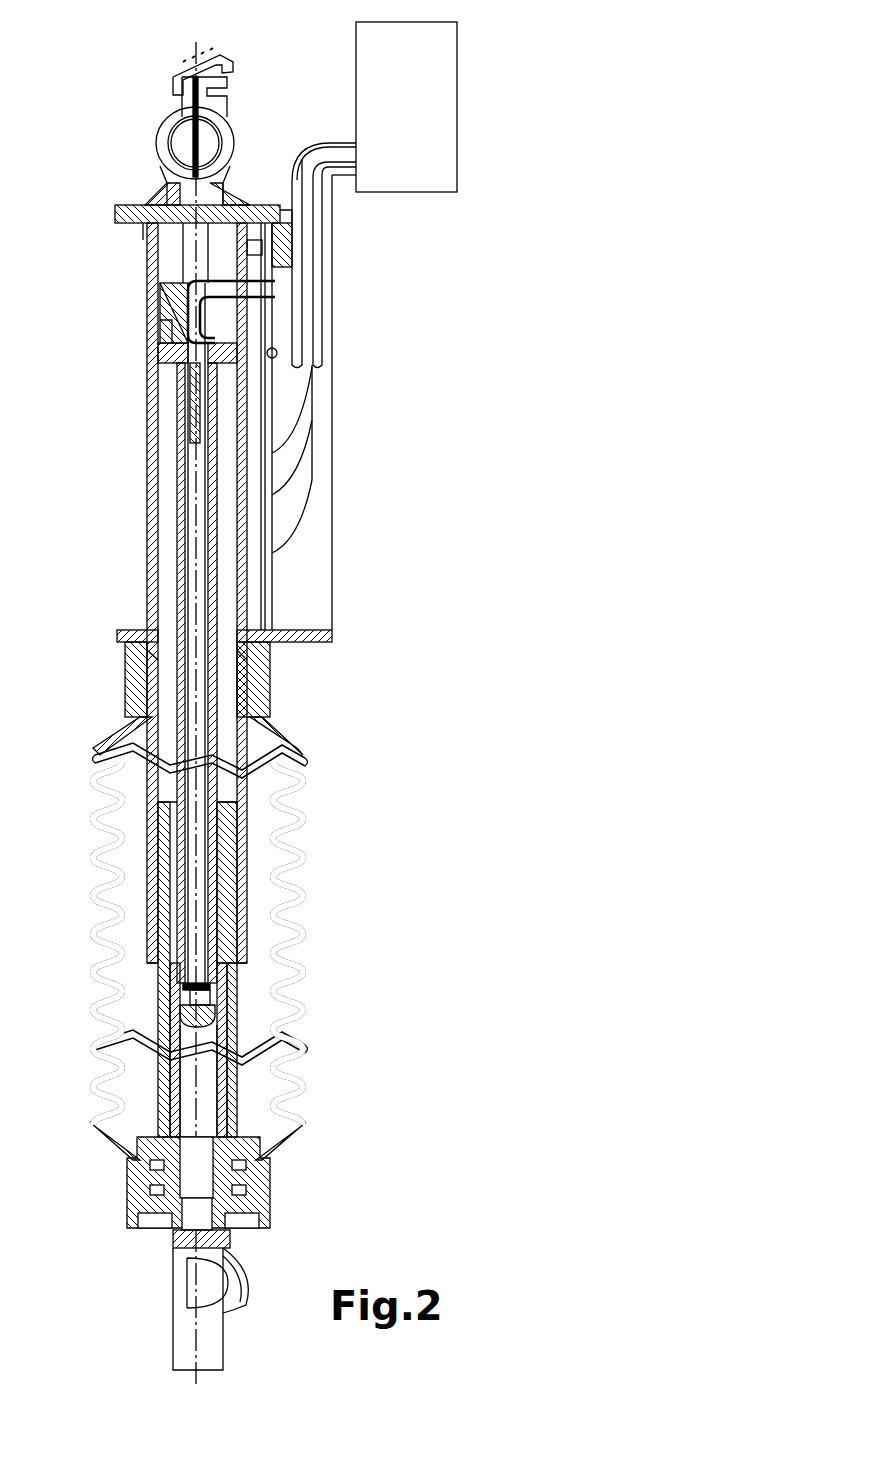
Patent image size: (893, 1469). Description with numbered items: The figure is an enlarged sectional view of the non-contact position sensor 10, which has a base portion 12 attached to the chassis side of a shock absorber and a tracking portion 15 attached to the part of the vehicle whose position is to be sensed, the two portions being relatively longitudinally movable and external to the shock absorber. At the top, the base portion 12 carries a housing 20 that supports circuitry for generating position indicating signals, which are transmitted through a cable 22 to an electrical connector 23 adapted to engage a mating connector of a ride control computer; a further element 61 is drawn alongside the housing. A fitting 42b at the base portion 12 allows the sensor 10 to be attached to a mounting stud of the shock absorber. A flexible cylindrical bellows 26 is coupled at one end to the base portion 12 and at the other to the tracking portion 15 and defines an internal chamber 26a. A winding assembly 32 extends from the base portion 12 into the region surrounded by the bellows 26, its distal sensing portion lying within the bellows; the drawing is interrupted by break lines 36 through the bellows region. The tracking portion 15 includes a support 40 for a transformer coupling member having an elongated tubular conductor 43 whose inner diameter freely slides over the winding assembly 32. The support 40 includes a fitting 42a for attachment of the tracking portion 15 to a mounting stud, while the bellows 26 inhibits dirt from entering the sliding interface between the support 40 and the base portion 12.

The non-contact position sensor 10 is at (318, 962).
The base portion 12 is at (148, 515).
The tracking portion 15 is at (254, 1115).
The housing 20 is at (330, 492).
The cable 22 is at (322, 160).
The electrical connector 23 is at (420, 117).
The flexible cylindrical bellows 26 is at (297, 828).
The internal chamber 26a is at (266, 893).
The winding assembly 32 is at (224, 777).
The break line region 36 is at (180, 782).
The support 40 is at (130, 1125).
The fitting 42a is at (203, 1307).
The fitting 42b is at (210, 99).
The elongated tubular conductor 43 is at (185, 1078).
The cable 61 is at (268, 595).